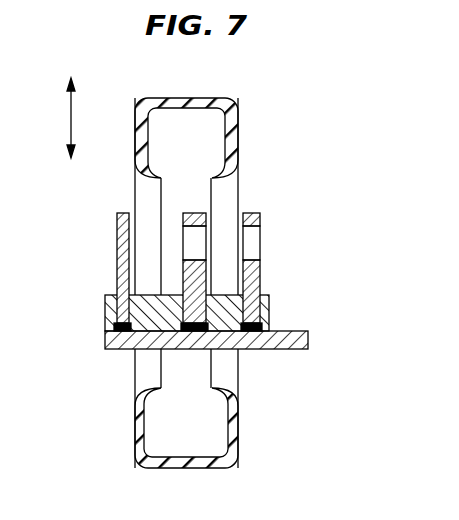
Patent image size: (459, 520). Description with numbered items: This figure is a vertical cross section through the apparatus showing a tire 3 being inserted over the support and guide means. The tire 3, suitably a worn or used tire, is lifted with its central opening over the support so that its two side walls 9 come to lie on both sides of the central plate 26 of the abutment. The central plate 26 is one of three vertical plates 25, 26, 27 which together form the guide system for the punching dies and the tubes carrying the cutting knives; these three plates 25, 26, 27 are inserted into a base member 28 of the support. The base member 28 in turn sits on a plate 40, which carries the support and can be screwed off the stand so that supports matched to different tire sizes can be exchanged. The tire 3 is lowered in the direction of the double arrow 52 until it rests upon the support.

The tire 3 is at (245, 440).
The side walls 9 is at (138, 132).
The vertical plate 25 is at (122, 260).
The central plate 26 is at (200, 208).
The vertical plate 27 is at (253, 282).
The base member 28 is at (105, 317).
The plate 40 is at (122, 345).
The double arrow 52 is at (70, 118).